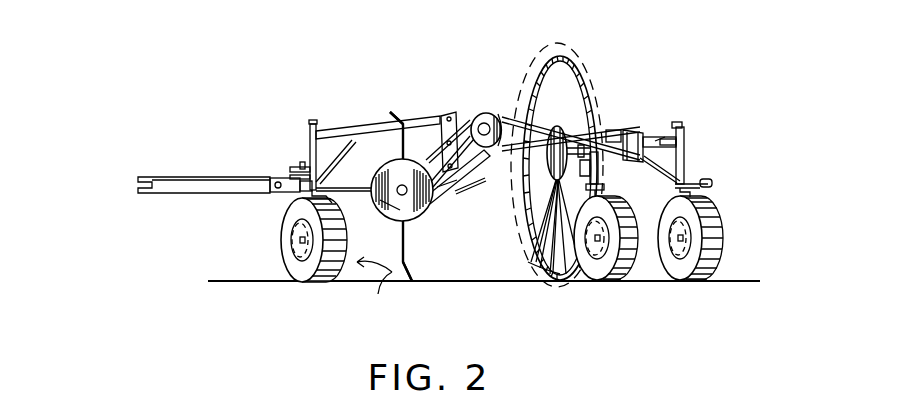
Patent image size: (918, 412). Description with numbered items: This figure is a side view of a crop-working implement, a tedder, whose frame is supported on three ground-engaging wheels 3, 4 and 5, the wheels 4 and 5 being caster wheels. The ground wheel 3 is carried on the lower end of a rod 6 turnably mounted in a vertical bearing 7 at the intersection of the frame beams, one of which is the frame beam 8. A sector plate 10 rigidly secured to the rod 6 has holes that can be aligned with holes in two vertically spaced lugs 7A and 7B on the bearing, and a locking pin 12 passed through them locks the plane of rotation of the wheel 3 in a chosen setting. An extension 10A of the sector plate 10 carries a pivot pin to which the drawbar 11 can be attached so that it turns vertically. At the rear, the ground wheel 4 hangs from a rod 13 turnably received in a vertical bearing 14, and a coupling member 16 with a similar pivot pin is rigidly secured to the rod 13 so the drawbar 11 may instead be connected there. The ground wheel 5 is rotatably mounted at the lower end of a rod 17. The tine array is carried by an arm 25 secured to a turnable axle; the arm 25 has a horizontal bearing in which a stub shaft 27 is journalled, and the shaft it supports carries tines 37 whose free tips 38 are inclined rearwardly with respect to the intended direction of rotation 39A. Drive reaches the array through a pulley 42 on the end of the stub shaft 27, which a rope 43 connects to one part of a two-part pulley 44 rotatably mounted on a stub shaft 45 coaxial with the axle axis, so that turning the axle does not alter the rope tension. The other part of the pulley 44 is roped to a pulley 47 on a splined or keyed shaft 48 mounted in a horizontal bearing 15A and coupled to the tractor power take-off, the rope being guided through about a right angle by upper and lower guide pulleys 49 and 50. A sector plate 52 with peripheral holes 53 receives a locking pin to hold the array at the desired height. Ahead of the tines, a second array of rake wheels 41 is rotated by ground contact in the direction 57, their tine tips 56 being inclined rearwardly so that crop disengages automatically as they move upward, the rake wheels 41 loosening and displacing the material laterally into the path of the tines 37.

The ground wheel 3 is at (284, 250).
The ground wheel 4 is at (722, 241).
The ground wheel 5 is at (632, 240).
The rod 6 is at (312, 196).
The vertical bearing 7 is at (311, 128).
The lug 7A is at (306, 168).
The lug 7B is at (298, 176).
The frame beam 8 is at (366, 136).
The sector plate 10 is at (280, 180).
The extension 10A is at (285, 193).
The drawbar 11 is at (191, 180).
The locking pin 12 is at (301, 169).
The rod 13 is at (682, 125).
The vertical bearing 14 is at (685, 165).
The horizontal bearing 15A is at (655, 141).
The coupling member 16 is at (712, 181).
The rod 17 is at (597, 187).
The arm 25 is at (457, 192).
The stub shaft 27 is at (400, 185).
The tines 37 is at (325, 196).
The tip 38 is at (396, 108).
The direction of rotation 39A is at (366, 279).
The rake wheels 41 is at (584, 98).
The drum face 42 is at (401, 215).
The rope 43 is at (447, 205).
The two-part pulley 44 is at (489, 118).
The stub shaft 45 is at (482, 120).
The pulley 47 is at (650, 117).
The shaft 48 is at (684, 142).
The upper guide pulley 49 is at (621, 129).
The lower guide pulley 50 is at (638, 168).
The sector plate 52 is at (480, 160).
The holes 53 is at (452, 110).
The tips 56 is at (540, 266).
The direction of rotation 57 is at (501, 218).